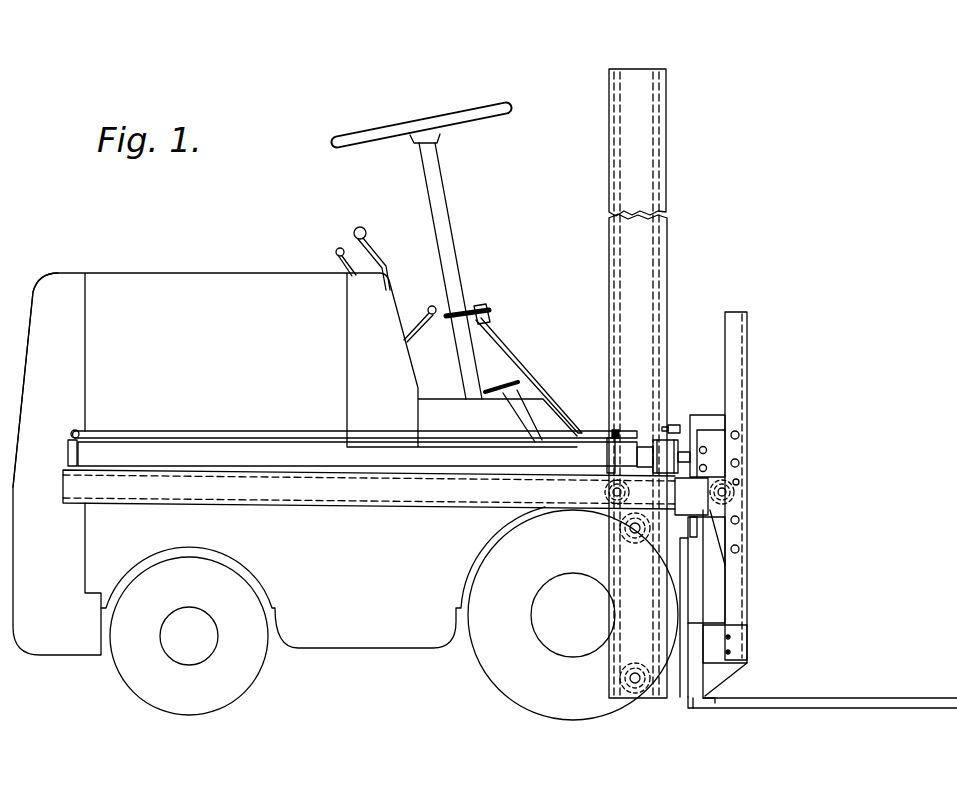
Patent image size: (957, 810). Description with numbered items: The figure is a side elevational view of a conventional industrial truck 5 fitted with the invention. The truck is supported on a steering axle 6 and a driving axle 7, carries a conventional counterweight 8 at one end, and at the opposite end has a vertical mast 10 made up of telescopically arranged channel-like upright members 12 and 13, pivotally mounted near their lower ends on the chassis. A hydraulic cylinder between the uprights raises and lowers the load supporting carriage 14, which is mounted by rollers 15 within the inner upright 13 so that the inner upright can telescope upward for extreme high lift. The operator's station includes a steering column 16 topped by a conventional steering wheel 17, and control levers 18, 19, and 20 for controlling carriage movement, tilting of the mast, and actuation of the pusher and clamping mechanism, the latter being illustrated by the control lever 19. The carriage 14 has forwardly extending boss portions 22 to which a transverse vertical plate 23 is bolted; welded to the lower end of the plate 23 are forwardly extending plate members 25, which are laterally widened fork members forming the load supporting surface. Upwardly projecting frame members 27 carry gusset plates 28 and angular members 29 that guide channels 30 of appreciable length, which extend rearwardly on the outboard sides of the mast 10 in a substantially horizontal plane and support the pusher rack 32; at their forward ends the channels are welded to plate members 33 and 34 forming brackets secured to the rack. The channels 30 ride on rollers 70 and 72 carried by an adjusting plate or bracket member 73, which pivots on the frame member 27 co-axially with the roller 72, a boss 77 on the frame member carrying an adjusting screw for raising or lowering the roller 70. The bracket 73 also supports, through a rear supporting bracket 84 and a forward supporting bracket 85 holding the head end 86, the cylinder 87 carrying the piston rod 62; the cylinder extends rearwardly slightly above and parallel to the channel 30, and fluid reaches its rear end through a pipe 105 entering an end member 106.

The industrial truck 5 is at (214, 271).
The steering axle 6 is at (180, 643).
The driving axle 7 is at (565, 625).
The counterweight 8 is at (67, 280).
The vertical mast 10 is at (606, 362).
The upright member 12 is at (608, 112).
The inner upright member 13 is at (618, 74).
The load supporting carriage 14 is at (672, 700).
The rollers 15 is at (620, 537).
The steering column 16 is at (458, 224).
The steering wheel 17 is at (480, 106).
The control lever 18 is at (341, 247).
The control lever 19 is at (425, 306).
The control lever 20 is at (373, 243).
The boss portions 22 is at (689, 704).
The plate 23 is at (712, 702).
The plate members 25 is at (885, 708).
The frame members 27 is at (700, 417).
The gusset plates 28 is at (718, 545).
The angular members 29 is at (700, 526).
The channels 30 is at (365, 500).
The pusher rack 32 is at (757, 322).
The plate member 33 is at (720, 453).
The plate member 34 is at (706, 500).
The piston rod 62 is at (690, 455).
The roller 70 is at (612, 498).
The roller 72 is at (736, 492).
The adjusting plate or bracket member 73 is at (612, 431).
The boss 77 is at (678, 424).
The rear supporting bracket 84 is at (609, 444).
The forward supporting bracket 85 is at (672, 438).
The head end 86 is at (648, 446).
The cylinder 87 is at (303, 452).
The pipes 105 is at (155, 431).
The end member 106 is at (68, 445).